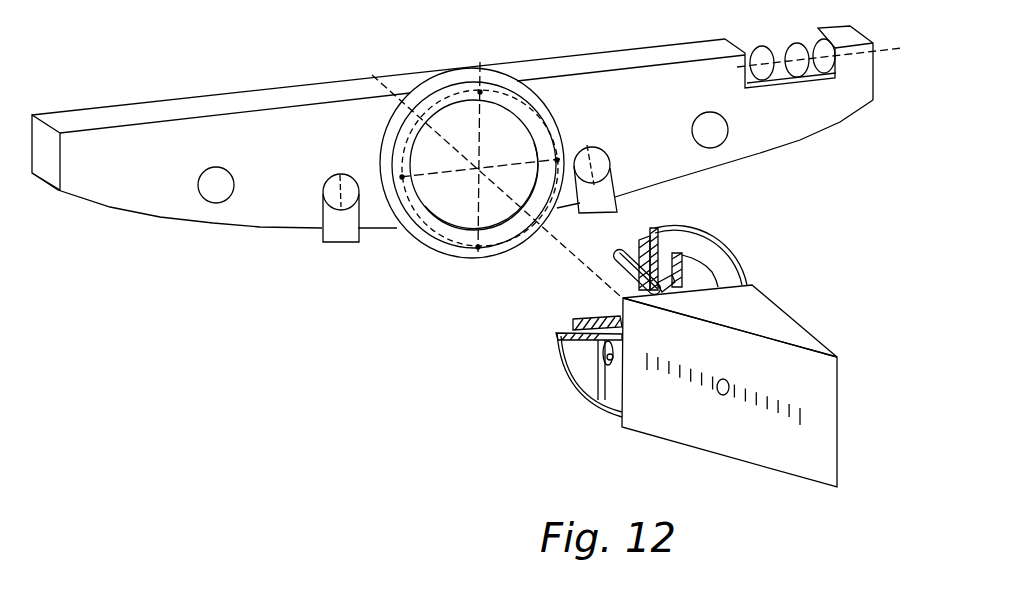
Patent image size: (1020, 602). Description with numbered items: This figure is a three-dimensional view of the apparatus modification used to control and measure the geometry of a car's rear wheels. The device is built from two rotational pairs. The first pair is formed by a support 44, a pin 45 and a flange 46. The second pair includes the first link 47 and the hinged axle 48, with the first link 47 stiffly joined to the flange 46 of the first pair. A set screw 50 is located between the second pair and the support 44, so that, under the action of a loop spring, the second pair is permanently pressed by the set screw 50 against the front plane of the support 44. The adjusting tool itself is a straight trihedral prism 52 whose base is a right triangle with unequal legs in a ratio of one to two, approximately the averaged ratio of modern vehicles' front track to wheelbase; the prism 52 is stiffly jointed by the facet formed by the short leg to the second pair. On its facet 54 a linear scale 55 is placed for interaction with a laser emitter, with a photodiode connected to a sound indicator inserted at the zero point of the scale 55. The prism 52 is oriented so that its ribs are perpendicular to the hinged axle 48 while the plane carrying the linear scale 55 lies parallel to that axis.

The support 44 is at (192, 107).
The pin 45 is at (655, 230).
The flange 46 is at (688, 253).
The first link 47 is at (600, 400).
The hinged axle 48 is at (602, 367).
The set screw 50 is at (728, 260).
The straight trihedral prism 52 is at (773, 327).
The facet 54 is at (672, 413).
The linear scale 55 is at (765, 400).